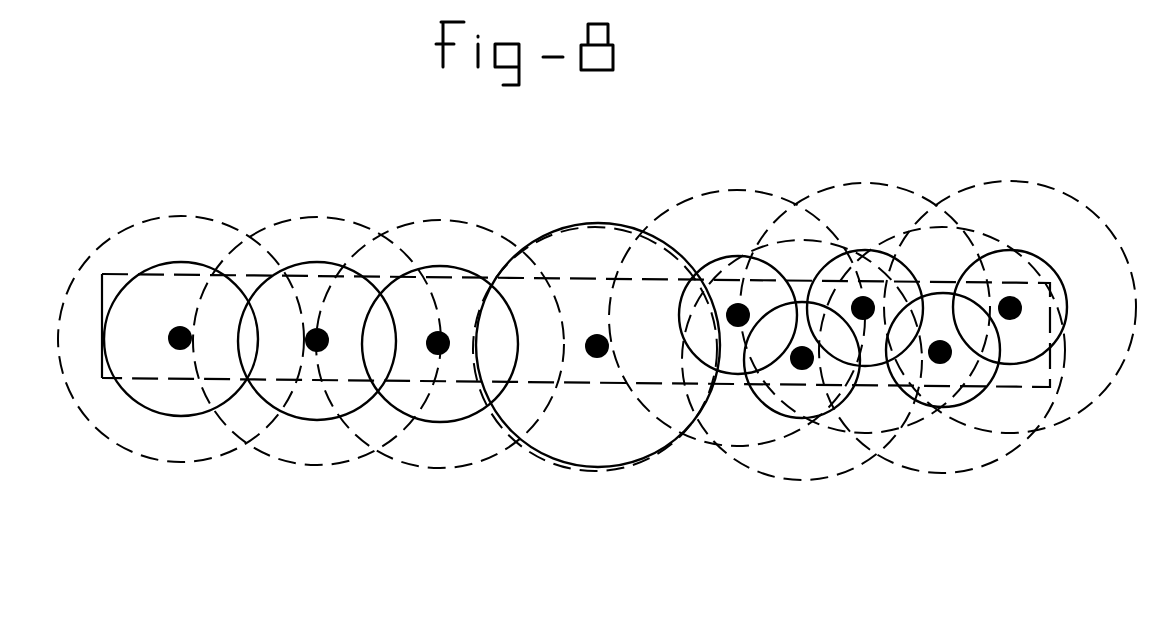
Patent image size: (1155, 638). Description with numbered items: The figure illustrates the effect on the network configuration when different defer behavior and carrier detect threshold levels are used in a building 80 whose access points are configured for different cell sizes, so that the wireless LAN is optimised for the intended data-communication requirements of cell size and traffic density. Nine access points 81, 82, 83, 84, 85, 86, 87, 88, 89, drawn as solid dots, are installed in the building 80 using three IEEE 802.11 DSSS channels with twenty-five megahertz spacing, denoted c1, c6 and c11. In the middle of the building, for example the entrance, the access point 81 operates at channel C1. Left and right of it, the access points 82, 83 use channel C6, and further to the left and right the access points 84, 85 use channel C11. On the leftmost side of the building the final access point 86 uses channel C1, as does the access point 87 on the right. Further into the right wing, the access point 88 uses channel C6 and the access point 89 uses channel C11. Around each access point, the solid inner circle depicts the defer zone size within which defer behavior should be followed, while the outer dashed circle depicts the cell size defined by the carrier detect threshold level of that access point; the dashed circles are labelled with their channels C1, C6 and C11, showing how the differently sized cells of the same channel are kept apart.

The building 80 is at (126, 270).
The access point 81 is at (604, 342).
The access point 82 is at (432, 338).
The access point 83 is at (731, 304).
The access point 84 is at (309, 335).
The access point 85 is at (803, 370).
The access point 86 is at (170, 333).
The access point 87 is at (864, 298).
The access point 88 is at (941, 364).
The access point 89 is at (1012, 298).
The channel c1 C1 is at (191, 462).
The channel c6 C6 is at (460, 468).
The channel c11 C11 is at (338, 466).